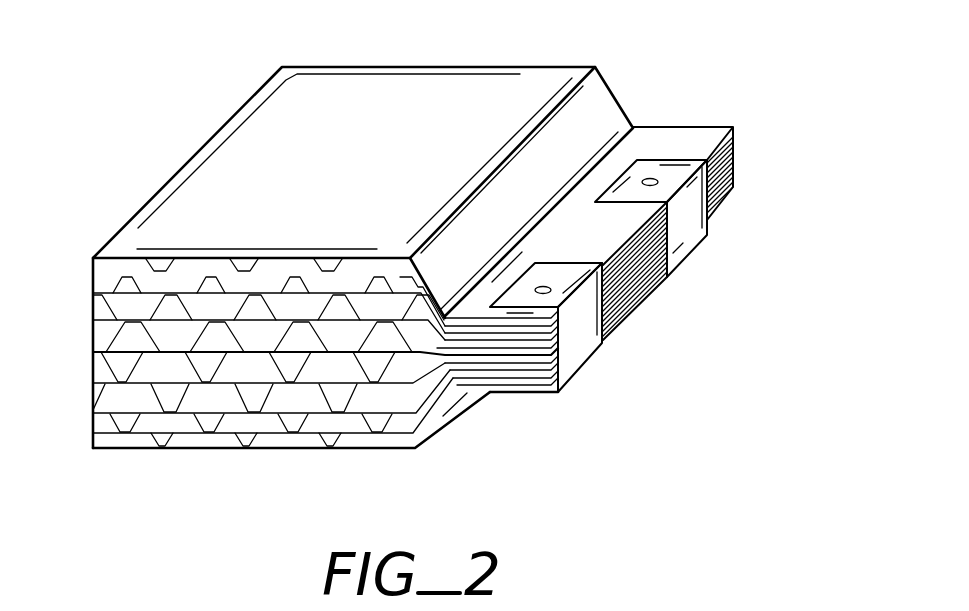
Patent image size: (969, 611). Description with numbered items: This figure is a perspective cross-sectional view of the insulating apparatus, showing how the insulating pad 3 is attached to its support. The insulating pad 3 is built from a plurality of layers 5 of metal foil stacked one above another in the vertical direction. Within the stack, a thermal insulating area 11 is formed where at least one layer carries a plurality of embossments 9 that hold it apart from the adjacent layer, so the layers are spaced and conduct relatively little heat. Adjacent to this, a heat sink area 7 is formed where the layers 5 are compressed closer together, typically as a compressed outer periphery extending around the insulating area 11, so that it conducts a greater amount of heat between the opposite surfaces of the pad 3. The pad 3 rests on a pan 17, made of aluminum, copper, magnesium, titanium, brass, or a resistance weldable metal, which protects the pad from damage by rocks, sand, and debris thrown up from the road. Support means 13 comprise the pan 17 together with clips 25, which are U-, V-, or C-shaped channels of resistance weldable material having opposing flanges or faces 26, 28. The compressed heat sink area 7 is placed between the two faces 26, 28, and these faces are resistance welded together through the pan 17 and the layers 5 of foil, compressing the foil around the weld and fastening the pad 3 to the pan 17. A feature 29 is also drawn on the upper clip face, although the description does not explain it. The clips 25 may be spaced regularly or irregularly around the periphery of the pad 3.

The insulating pad 3 is at (437, 58).
The layers of metal foil 5 is at (88, 258).
The heat sink area 7 is at (740, 127).
The embossments 9 is at (165, 300).
The thermal insulating area 11 is at (285, 143).
The support means 13 is at (708, 257).
The pan 17 is at (416, 443).
The clips 25 is at (604, 342).
The opposing face of clip 26 is at (555, 357).
The opposing face of clip 28 is at (532, 394).
The terminal hole 29 is at (650, 178).